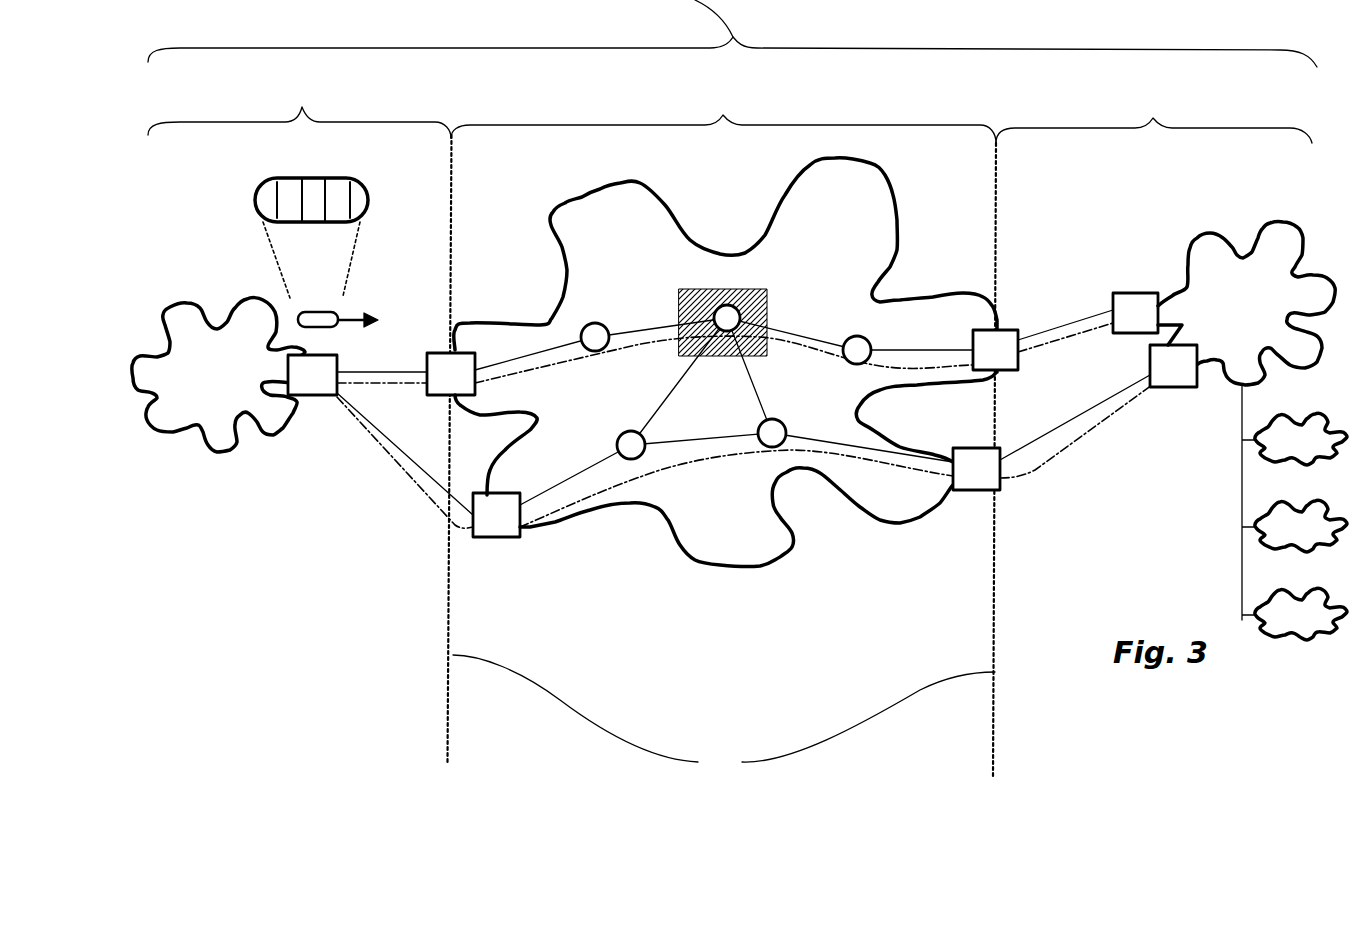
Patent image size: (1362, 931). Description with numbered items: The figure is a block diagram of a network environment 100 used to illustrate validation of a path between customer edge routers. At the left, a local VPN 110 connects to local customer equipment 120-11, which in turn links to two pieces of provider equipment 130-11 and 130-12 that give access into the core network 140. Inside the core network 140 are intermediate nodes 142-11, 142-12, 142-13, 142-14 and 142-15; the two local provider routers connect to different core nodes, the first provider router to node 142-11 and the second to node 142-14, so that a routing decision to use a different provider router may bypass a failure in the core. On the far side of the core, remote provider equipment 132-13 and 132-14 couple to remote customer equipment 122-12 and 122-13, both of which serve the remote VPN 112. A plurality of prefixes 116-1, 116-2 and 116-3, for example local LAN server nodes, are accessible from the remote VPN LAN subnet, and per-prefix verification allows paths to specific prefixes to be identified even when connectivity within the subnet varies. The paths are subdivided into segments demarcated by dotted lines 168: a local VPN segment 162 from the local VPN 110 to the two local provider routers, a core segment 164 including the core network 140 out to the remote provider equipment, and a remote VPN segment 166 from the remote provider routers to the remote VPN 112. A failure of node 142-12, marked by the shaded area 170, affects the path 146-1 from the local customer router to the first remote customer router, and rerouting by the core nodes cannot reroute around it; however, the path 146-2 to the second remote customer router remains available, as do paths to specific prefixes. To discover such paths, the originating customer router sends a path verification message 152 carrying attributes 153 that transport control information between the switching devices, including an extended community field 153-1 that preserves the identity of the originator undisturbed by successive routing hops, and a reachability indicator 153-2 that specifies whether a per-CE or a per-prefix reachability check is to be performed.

The network environment 100 is at (418, 597).
The local VPN 110 is at (222, 452).
The remote VPN 112 is at (1160, 225).
The prefix 116-1 is at (1324, 449).
The prefix 116-2 is at (1301, 526).
The prefix 116-3 is at (1301, 614).
The customer equipment 120-11 is at (323, 396).
The customer equipment 122-12 is at (1135, 293).
The customer equipment 122-13 is at (1160, 388).
The provider equipment 130-11 is at (432, 352).
The provider equipment 130-12 is at (505, 537).
The provider equipment 132-13 is at (1015, 372).
The provider equipment 132-14 is at (1000, 488).
The core network 140 is at (720, 566).
The intermediate node 142-11 is at (600, 323).
The intermediate node 142-12 is at (722, 306).
The intermediate node 142-13 is at (860, 336).
The intermediate node 142-14 is at (640, 458).
The intermediate node 142-15 is at (766, 447).
The path CE1-CE2 146-1 is at (636, 347).
The path CE1-CE3 146-2 is at (838, 458).
The path verification message 152 is at (286, 312).
The attributes 153 is at (268, 195).
The extended community field 153-1 is at (288, 180).
The reachability indicator 153-2 is at (313, 178).
The local VPN segment 162 is at (302, 107).
The core segment 164 is at (723, 115).
The remote VPN segment 166 is at (1153, 118).
The dotted lines 168 is at (724, 713).
The shaded area 170 is at (766, 290).